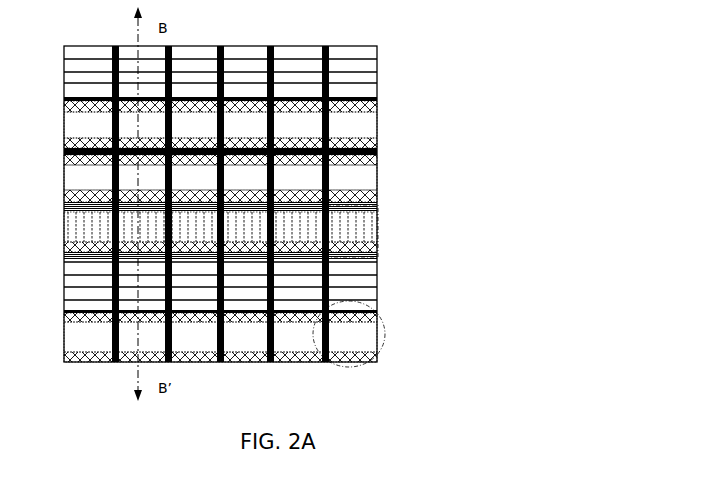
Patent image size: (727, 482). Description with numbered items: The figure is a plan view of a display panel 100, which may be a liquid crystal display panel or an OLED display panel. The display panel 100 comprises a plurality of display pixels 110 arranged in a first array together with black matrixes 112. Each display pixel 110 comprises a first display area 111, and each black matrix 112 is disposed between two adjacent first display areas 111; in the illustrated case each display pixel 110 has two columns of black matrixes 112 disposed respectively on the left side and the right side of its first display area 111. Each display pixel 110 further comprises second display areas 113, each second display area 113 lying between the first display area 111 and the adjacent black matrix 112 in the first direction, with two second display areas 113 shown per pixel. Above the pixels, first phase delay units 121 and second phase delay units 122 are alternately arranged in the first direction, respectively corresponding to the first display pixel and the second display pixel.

The display panel 100 is at (441, 18).
The display pixel 110 is at (383, 338).
The first display area 111 is at (377, 230).
The black matrix 112 is at (377, 257).
The second display area 113 is at (378, 195).
The first phase delay unit 121 is at (377, 75).
The second phase delay unit 122 is at (377, 128).